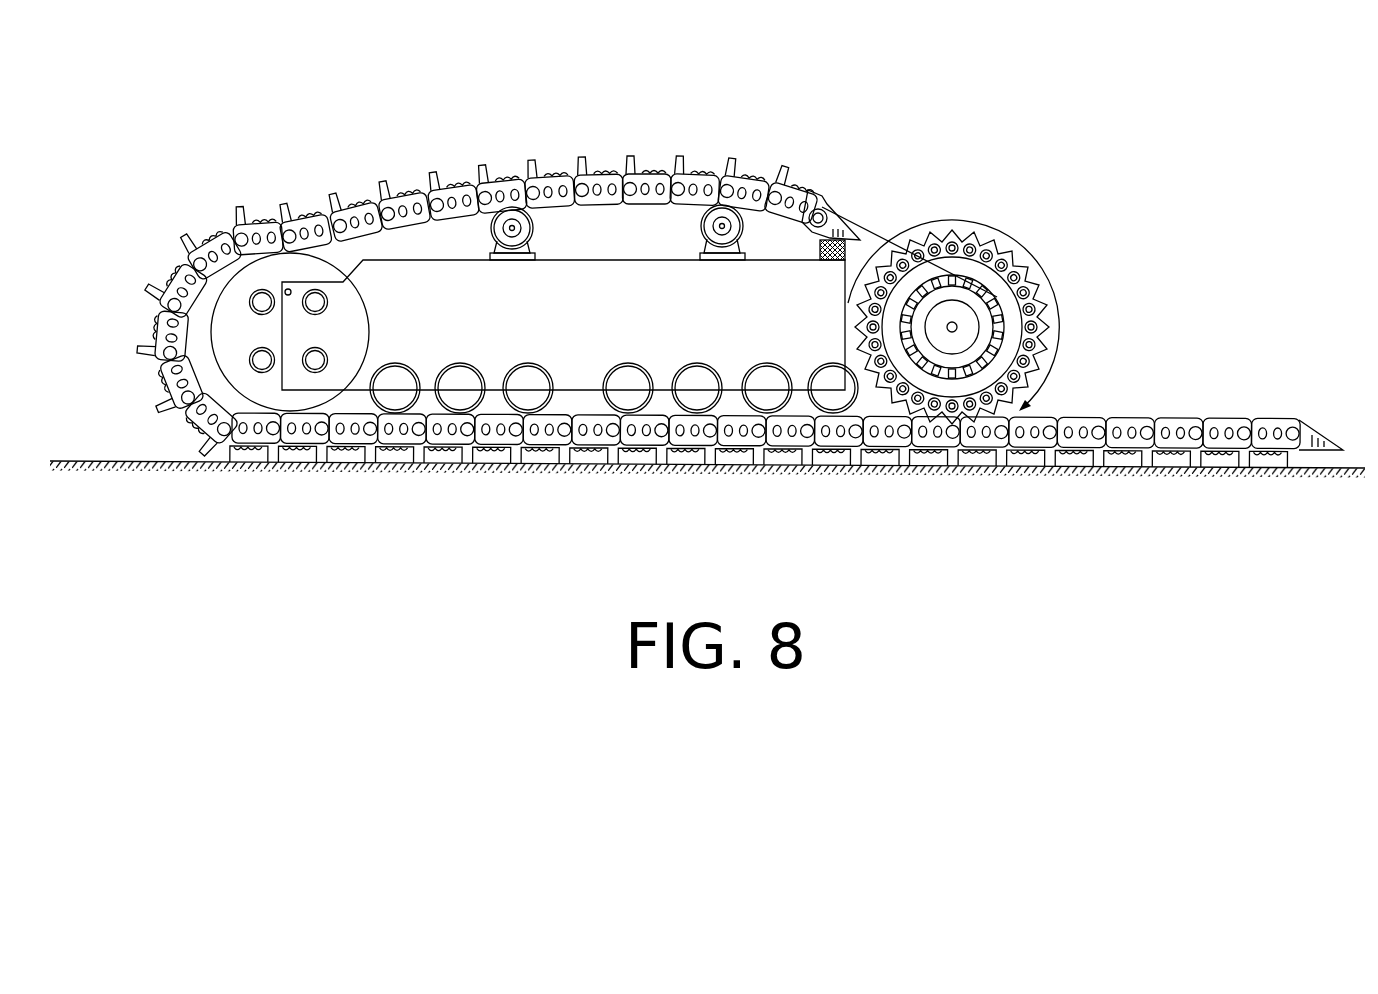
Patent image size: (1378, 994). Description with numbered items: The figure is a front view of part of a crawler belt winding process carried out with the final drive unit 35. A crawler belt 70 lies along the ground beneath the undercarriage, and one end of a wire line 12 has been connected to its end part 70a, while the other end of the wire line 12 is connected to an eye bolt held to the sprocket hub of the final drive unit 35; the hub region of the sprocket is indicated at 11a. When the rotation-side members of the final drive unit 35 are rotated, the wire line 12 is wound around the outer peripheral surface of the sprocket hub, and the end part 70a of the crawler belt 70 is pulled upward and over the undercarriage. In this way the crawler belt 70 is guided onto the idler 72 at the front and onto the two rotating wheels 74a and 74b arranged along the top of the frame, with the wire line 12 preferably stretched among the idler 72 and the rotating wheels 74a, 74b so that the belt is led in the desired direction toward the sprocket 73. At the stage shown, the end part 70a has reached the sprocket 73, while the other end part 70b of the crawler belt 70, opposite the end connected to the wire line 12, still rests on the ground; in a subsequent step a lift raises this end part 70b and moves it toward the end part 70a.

The idler 72 is at (263, 272).
The rotating wheel 74b is at (511, 228).
The rotating wheel 74a is at (722, 226).
The end part 70a is at (817, 208).
The wire line 12 is at (884, 240).
The sprocket 73 is at (984, 282).
The final drive unit 35 is at (1021, 214).
The hub bearing 11a is at (999, 296).
The crawler belt 70 is at (1122, 406).
The other end part 70b is at (1321, 440).